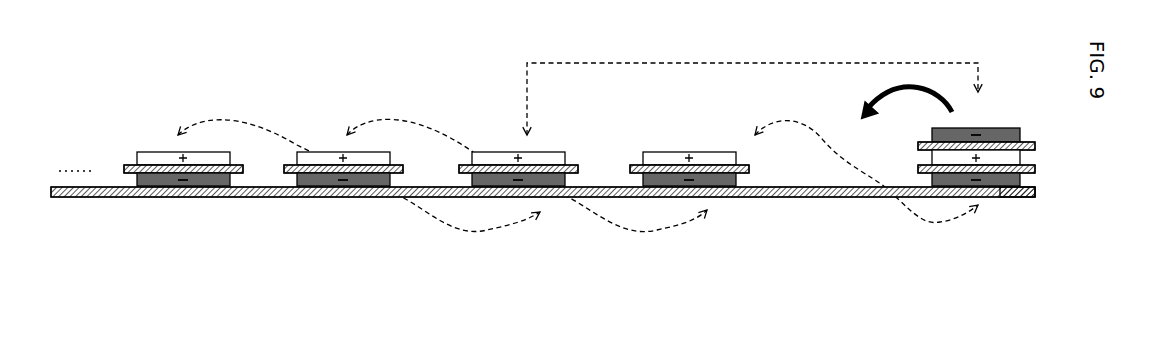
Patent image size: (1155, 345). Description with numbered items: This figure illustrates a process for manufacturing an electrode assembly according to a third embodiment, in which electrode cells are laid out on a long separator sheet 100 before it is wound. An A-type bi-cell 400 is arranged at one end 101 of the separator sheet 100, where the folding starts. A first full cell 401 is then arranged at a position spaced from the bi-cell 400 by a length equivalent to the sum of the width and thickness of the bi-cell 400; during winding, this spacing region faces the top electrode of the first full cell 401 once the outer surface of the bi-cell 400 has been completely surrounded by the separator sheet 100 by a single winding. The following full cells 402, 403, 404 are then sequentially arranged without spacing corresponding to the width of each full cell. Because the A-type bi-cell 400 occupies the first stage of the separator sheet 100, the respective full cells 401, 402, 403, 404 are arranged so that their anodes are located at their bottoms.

The separator sheet 100 is at (267, 198).
The one end of the separator sheet 101 is at (1040, 197).
The A-type bi-cell 400 is at (993, 128).
The first full cell 401 is at (672, 151).
The full cell 402 is at (512, 151).
The full cell 403 is at (325, 151).
The full cell 404 is at (165, 151).